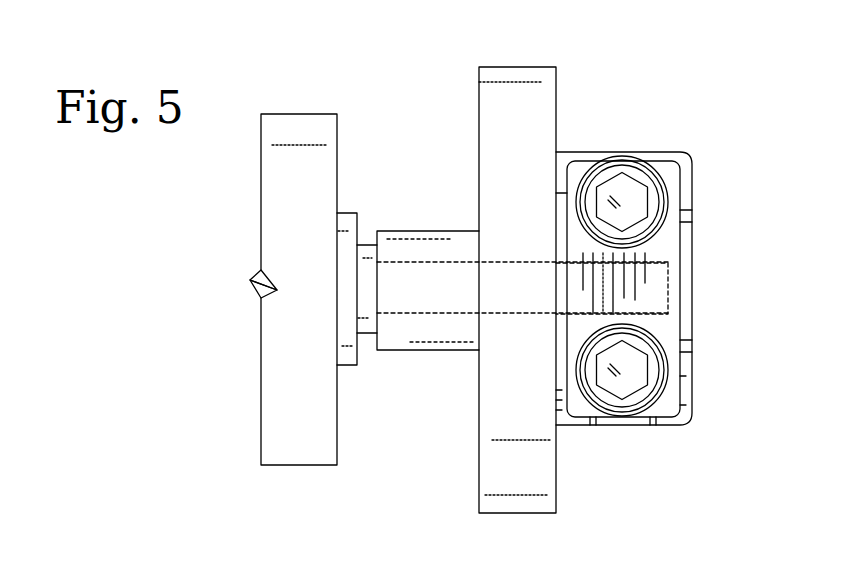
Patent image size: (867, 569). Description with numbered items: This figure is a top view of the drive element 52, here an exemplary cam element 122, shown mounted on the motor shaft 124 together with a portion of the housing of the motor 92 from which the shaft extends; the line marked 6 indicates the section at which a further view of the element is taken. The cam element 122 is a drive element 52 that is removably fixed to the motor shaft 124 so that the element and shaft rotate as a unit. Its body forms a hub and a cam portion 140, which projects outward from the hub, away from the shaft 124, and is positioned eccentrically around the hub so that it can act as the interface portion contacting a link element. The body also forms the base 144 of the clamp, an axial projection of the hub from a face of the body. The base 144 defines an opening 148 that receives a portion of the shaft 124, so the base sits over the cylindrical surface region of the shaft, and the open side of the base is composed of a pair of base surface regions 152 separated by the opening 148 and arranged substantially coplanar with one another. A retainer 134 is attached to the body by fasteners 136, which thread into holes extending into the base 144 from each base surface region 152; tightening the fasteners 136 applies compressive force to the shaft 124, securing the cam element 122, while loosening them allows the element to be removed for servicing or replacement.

The drive element 52 is at (660, 38).
The cam element 122 is at (660, 75).
The motor 92 is at (297, 113).
The cam portion 140 is at (518, 66).
The fasteners 136 is at (622, 157).
The motor shaft 124 is at (678, 292).
The base surface regions 152 is at (685, 183).
The opening 148 is at (686, 268).
The retainer 134 is at (681, 338).
The base 144 is at (661, 428).
The section line 6- 6 is at (237, 281).